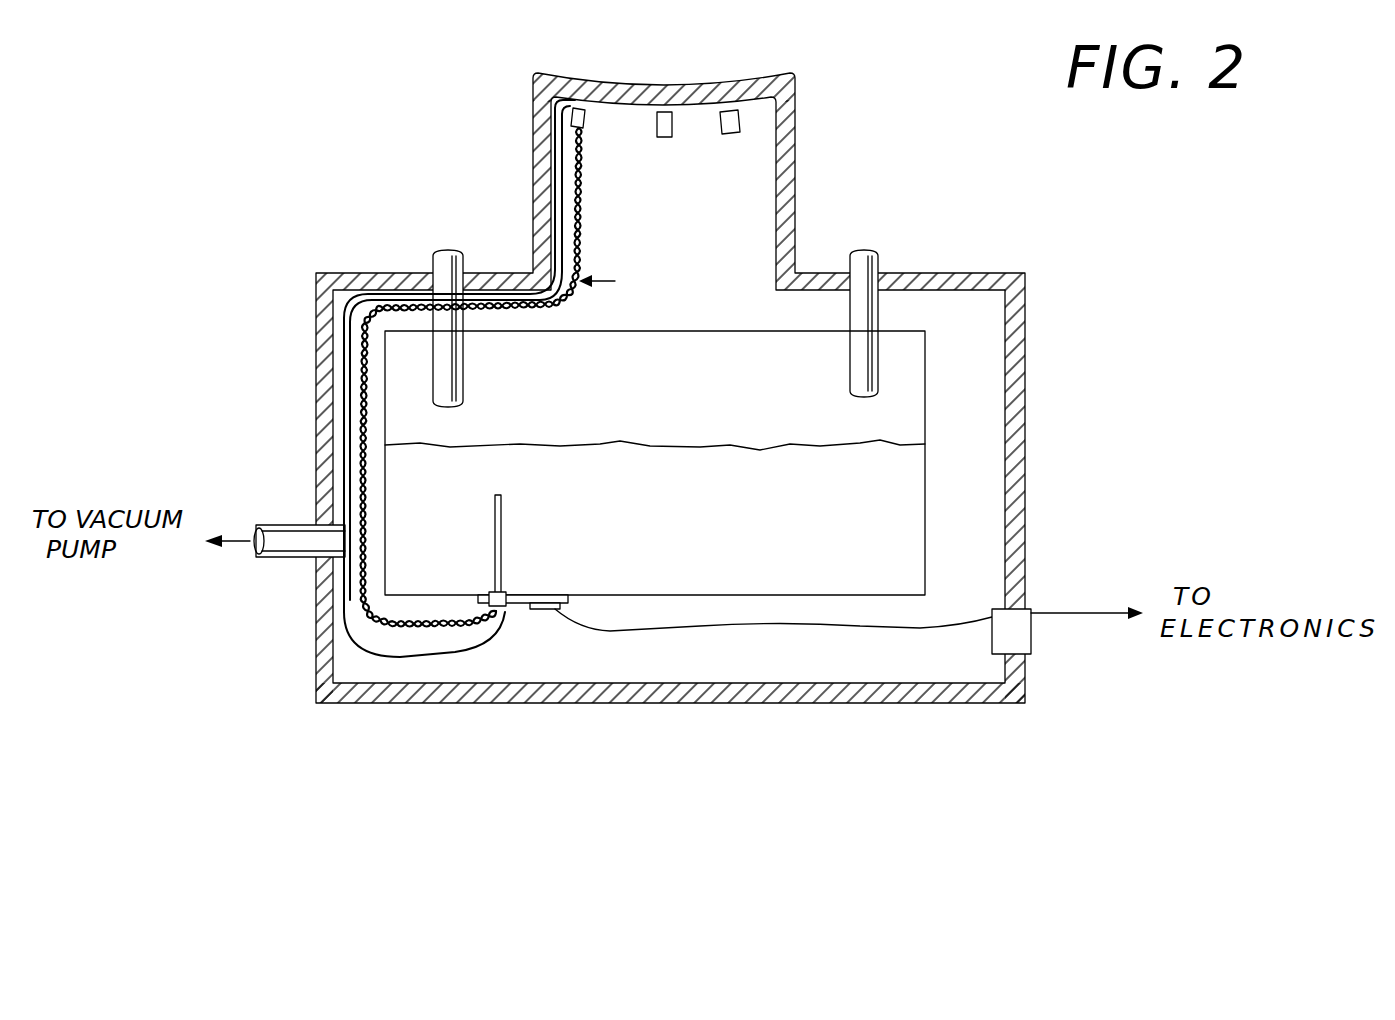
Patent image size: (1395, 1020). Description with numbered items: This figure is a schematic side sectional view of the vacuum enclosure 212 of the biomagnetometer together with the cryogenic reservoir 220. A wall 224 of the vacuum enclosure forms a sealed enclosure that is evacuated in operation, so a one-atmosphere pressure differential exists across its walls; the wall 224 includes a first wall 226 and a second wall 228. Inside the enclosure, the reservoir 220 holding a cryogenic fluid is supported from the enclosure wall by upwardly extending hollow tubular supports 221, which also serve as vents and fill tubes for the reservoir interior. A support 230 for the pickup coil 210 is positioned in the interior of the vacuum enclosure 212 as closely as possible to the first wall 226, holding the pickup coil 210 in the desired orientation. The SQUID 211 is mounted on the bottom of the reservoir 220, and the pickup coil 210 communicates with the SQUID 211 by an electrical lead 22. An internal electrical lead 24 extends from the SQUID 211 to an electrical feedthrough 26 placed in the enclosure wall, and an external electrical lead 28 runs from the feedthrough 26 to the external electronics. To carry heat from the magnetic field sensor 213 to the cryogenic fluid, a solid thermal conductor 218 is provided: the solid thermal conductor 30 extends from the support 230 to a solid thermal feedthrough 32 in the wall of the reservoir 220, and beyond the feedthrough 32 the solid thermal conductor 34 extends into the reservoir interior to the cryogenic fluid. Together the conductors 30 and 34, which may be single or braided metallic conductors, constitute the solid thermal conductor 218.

The pickup coil 210 is at (578, 100).
The SQUID 211 is at (542, 612).
The vacuum enclosure 212 is at (316, 345).
The magnetic field sensor 213 is at (518, 158).
The solid thermal conductor 218 is at (628, 282).
The cryogenic reservoir 220 is at (930, 522).
The hollow tubular support 221 is at (880, 306).
The electrical lead 22 is at (560, 228).
The wall 224 is at (1027, 325).
The first wall 226 is at (740, 82).
The second wall 228 is at (908, 702).
The support 230 is at (588, 120).
The internal electrical lead 24 is at (775, 625).
The electrical feedthrough 26 is at (1028, 641).
The external electrical lead 28 is at (1076, 612).
The solid thermal conductor 30 is at (582, 230).
The solid thermal feedthrough 32 is at (494, 592).
The solid thermal conductor 34 is at (503, 522).